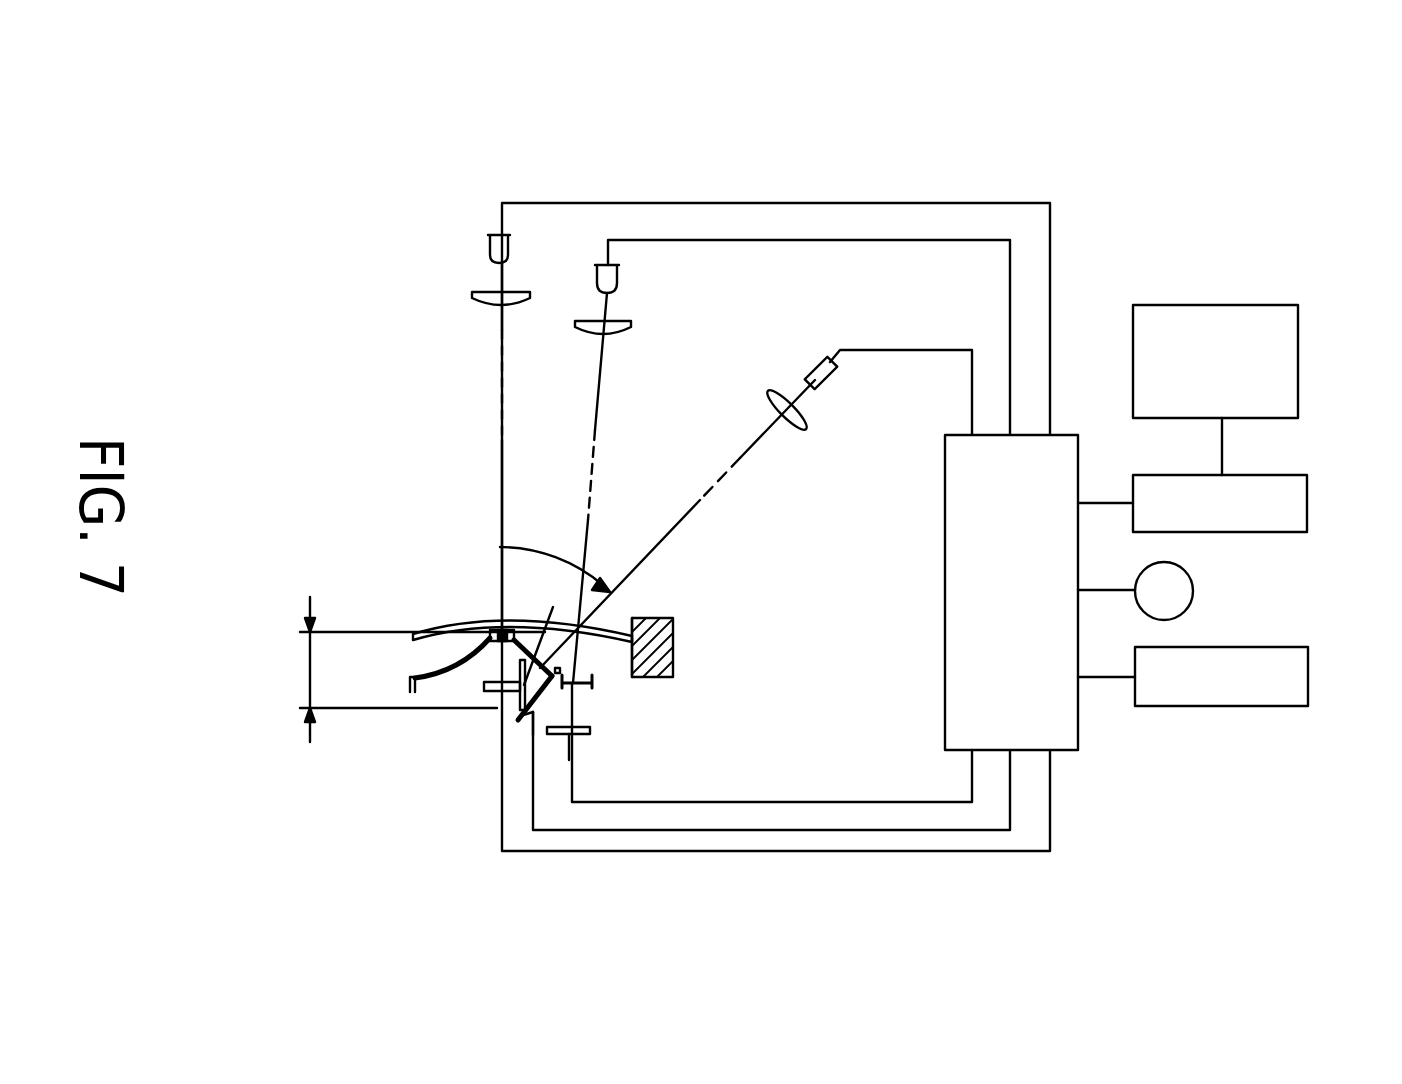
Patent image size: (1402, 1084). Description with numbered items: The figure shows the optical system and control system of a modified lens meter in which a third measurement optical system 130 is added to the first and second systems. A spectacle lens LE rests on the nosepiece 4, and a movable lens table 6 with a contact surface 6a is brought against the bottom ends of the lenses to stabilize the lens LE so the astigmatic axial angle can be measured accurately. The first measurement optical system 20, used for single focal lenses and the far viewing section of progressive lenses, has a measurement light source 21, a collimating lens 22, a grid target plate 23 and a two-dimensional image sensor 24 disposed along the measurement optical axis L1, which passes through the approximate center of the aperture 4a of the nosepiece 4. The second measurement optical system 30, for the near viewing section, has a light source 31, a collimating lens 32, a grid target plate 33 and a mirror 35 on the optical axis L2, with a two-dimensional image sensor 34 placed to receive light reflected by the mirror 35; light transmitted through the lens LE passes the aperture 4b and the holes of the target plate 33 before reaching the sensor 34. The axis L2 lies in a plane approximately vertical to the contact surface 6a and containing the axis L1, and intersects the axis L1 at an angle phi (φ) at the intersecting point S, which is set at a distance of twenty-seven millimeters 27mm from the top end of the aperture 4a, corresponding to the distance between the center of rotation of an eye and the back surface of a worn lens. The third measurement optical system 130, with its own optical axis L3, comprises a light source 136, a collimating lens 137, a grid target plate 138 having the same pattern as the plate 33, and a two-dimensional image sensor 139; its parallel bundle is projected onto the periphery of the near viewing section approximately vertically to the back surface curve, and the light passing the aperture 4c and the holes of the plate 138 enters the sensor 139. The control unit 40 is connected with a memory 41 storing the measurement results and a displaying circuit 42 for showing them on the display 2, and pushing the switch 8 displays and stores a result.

The display 2 is at (1298, 350).
The nosepiece 4 is at (480, 637).
The aperture 4a is at (506, 627).
The aperture 4b is at (549, 632).
The aperture 4c is at (590, 731).
The lens table 6 is at (673, 650).
The contact surface 6a is at (620, 617).
The switch 8 is at (1193, 590).
The first measurement optical system 20 is at (385, 392).
The measurement light source 21 is at (488, 248).
The collimating lens 22 is at (472, 298).
The grid target plate 23 is at (496, 627).
The two-dimensional image sensor 24 is at (495, 691).
The second measurement optical system 30 is at (748, 512).
The measurement light source 31 is at (826, 388).
The collimating lens 32 is at (805, 430).
The grid target plate 33 is at (565, 676).
The two-dimensional image sensor 34 is at (517, 726).
The mirror 35 is at (495, 668).
The control unit 40 is at (945, 565).
The memory 41 is at (1270, 647).
The displaying circuit 42 is at (1270, 475).
The third measurement optical system 130 is at (655, 395).
The measurement light source 136 is at (597, 278).
The collimating lens 137 is at (584, 335).
The grid target plate 138 is at (595, 684).
The two-dimensional image sensor 139 is at (586, 737).
The measurement optical axis L1 is at (500, 456).
The measurement optical axis L2 is at (682, 515).
The measurement optical axis L3 is at (590, 490).
The lens LE is at (488, 627).
The intersecting point S is at (518, 718).
The angle phi is at (555, 561).
The distance 27mm is at (408, 669).